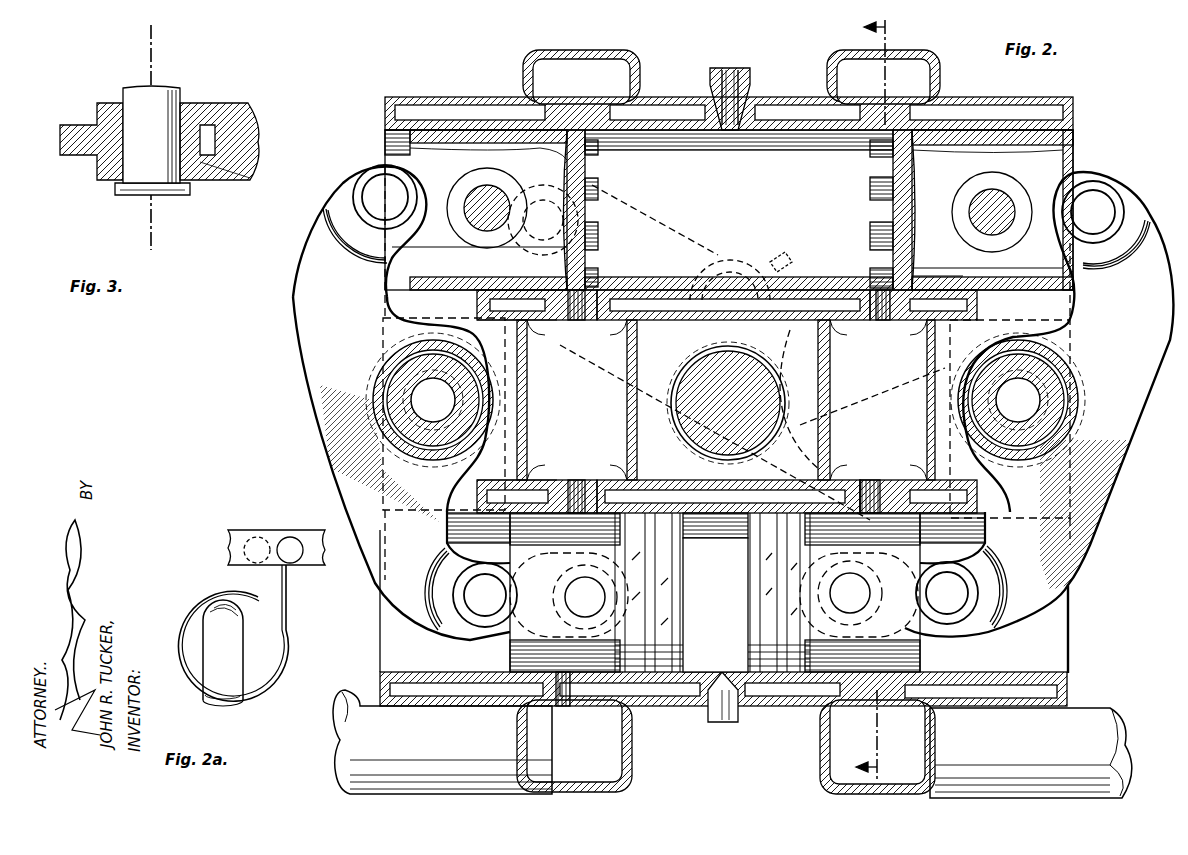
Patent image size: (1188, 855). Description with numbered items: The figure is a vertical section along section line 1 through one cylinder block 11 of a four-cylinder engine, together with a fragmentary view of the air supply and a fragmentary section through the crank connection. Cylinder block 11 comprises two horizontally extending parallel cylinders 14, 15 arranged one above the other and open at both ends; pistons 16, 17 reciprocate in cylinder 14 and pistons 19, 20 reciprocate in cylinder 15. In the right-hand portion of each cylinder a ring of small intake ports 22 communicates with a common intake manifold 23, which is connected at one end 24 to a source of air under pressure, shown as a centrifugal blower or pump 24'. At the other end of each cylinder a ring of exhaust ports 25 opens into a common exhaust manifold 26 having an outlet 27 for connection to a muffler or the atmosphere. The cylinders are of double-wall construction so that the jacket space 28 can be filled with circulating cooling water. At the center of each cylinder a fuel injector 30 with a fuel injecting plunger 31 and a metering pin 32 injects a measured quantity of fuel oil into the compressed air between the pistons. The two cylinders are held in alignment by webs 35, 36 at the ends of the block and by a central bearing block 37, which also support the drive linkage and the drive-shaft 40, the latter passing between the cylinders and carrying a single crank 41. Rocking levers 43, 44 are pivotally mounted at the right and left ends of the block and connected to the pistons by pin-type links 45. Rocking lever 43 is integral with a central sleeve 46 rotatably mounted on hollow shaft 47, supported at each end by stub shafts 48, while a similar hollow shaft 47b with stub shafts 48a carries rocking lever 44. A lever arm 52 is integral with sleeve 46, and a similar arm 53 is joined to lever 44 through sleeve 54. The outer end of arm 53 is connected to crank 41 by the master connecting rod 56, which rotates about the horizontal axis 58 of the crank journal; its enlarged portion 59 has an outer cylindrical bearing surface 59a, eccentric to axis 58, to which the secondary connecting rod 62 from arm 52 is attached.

In FIG. 2, the section line 1— 1 is at (883, 399).
In FIG. 2, the cylinder block 11 is at (472, 97).
In FIG. 2, the cylinder 14 is at (740, 210).
In FIG. 2, the cylinder 15 is at (715, 592).
In FIG. 2, the piston 16 is at (998, 130).
In FIG. 2, the piston 17 is at (432, 130).
In FIG. 2, the piston 19 is at (778, 635).
In FIG. 2, the piston 20 is at (715, 592).
In FIG. 2, the intake ports 22 is at (872, 190).
In FIG. 2A, the intake manifold 23 is at (300, 542).
In FIG. 2, the intake manifold 23 is at (943, 748).
In FIG. 2A, the manifold end 24 is at (257, 633).
In FIG. 2, the manifold end 24 is at (1031, 753).
In FIG. 2A, the centrifugal blower or pump 24' is at (269, 653).
In FIG. 2, the exhaust ports 25 is at (600, 236).
In FIG. 2, the exhaust manifold 26 is at (578, 421).
In FIG. 2, the exhaust manifold outlet 27 is at (442, 742).
In FIG. 2, the jacket space 28 is at (792, 102).
In FIG. 2, the fuel injector 30 is at (712, 82).
In FIG. 2, the fuel injecting plunger 31 is at (727, 68).
In FIG. 2, the metering pin 32 is at (742, 68).
In FIG. 2, the web 35 is at (940, 350).
In FIG. 2, the web 36 is at (522, 450).
In FIG. 2, the bearing block 37 is at (728, 400).
In FIG. 2, the drive-shaft 40 is at (752, 395).
In FIG. 3, the crank 41 is at (168, 100).
In FIG. 2, the crank 41 is at (695, 283).
In FIG. 2, the rocking lever 43 is at (1110, 460).
In FIG. 2, the rocking lever 44 is at (305, 350).
In FIG. 2, the links 45 is at (398, 165).
In FIG. 2, the sleeve 46 is at (1048, 365).
In FIG. 2, the hollow shaft 47 is at (1062, 398).
In FIG. 2, the hollow shaft 47b is at (395, 412).
In FIG. 2, the stub shaft 48 is at (1030, 410).
In FIG. 2, the stub shafts 48a is at (445, 405).
In FIG. 2, the lever arm 52 is at (893, 395).
In FIG. 2, the arm 53 is at (520, 352).
In FIG. 2, the sleeve 54 is at (395, 370).
In FIG. 3, the master connecting rod 56 is at (82, 150).
In FIG. 2, the master connecting rod 56 is at (704, 245).
In FIG. 3, the horizontal axis 58 is at (148, 225).
In FIG. 3, the enlarged portion 59 is at (195, 106).
In FIG. 3, the cylindrical bearing surface 59a is at (214, 128).
In FIG. 2, the cylindrical bearing surface 59a is at (748, 270).
In FIG. 3, the secondary connecting rod 62 is at (238, 170).
In FIG. 2, the secondary connecting rod 62 is at (855, 437).